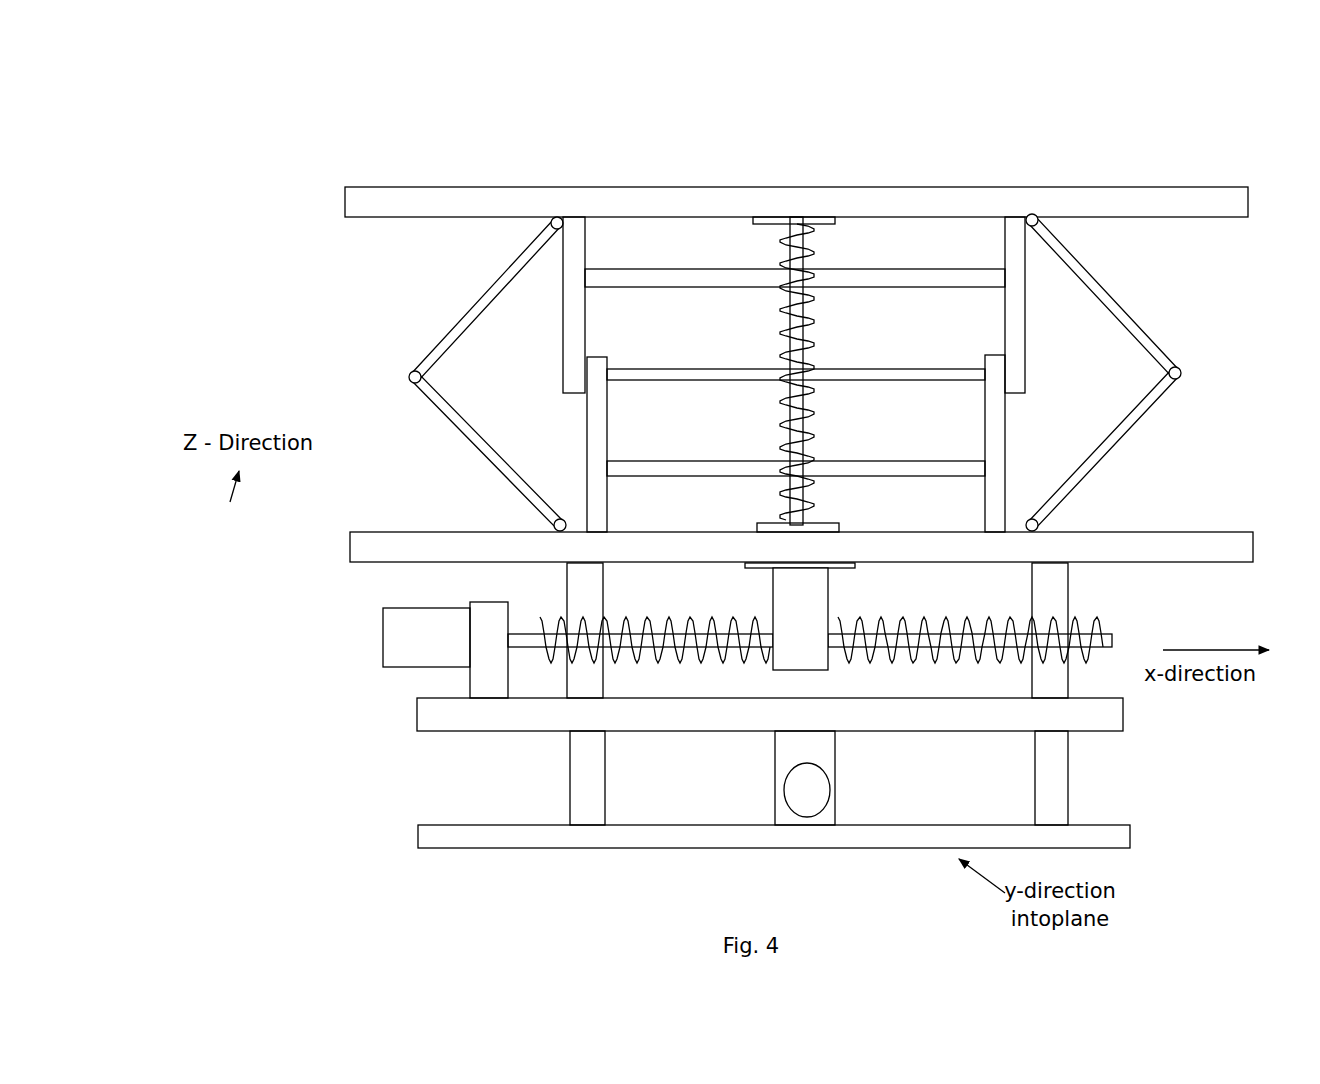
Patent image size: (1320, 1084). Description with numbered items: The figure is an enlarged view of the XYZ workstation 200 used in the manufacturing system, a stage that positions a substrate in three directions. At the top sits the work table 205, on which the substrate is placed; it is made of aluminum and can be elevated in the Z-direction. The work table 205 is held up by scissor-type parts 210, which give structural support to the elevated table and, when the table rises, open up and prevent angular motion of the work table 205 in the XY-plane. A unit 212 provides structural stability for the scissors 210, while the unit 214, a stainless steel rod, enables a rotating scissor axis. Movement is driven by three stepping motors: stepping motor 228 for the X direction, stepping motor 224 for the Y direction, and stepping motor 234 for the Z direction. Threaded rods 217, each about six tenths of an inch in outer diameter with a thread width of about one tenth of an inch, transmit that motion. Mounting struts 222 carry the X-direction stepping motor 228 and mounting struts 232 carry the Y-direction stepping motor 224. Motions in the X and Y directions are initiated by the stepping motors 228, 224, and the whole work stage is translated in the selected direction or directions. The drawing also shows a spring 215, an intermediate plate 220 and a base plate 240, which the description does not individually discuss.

The XYZ workstation 200 is at (681, 148).
The work table 205 is at (736, 195).
The scissor-type parts 210 is at (552, 322).
The unit for structural stability 212 is at (957, 293).
The rotating scissor axis unit 214 is at (731, 363).
The spring 215 is at (798, 312).
The threaded rods 217 is at (820, 402).
The intermediate plate 220 is at (1110, 545).
The mounting struts 222 is at (592, 595).
The stepping motor 224 is at (838, 687).
The stepping motor 228 is at (374, 653).
The mounting struts 232 is at (563, 776).
The stepping motor 234 is at (847, 794).
The base plate 240 is at (698, 838).